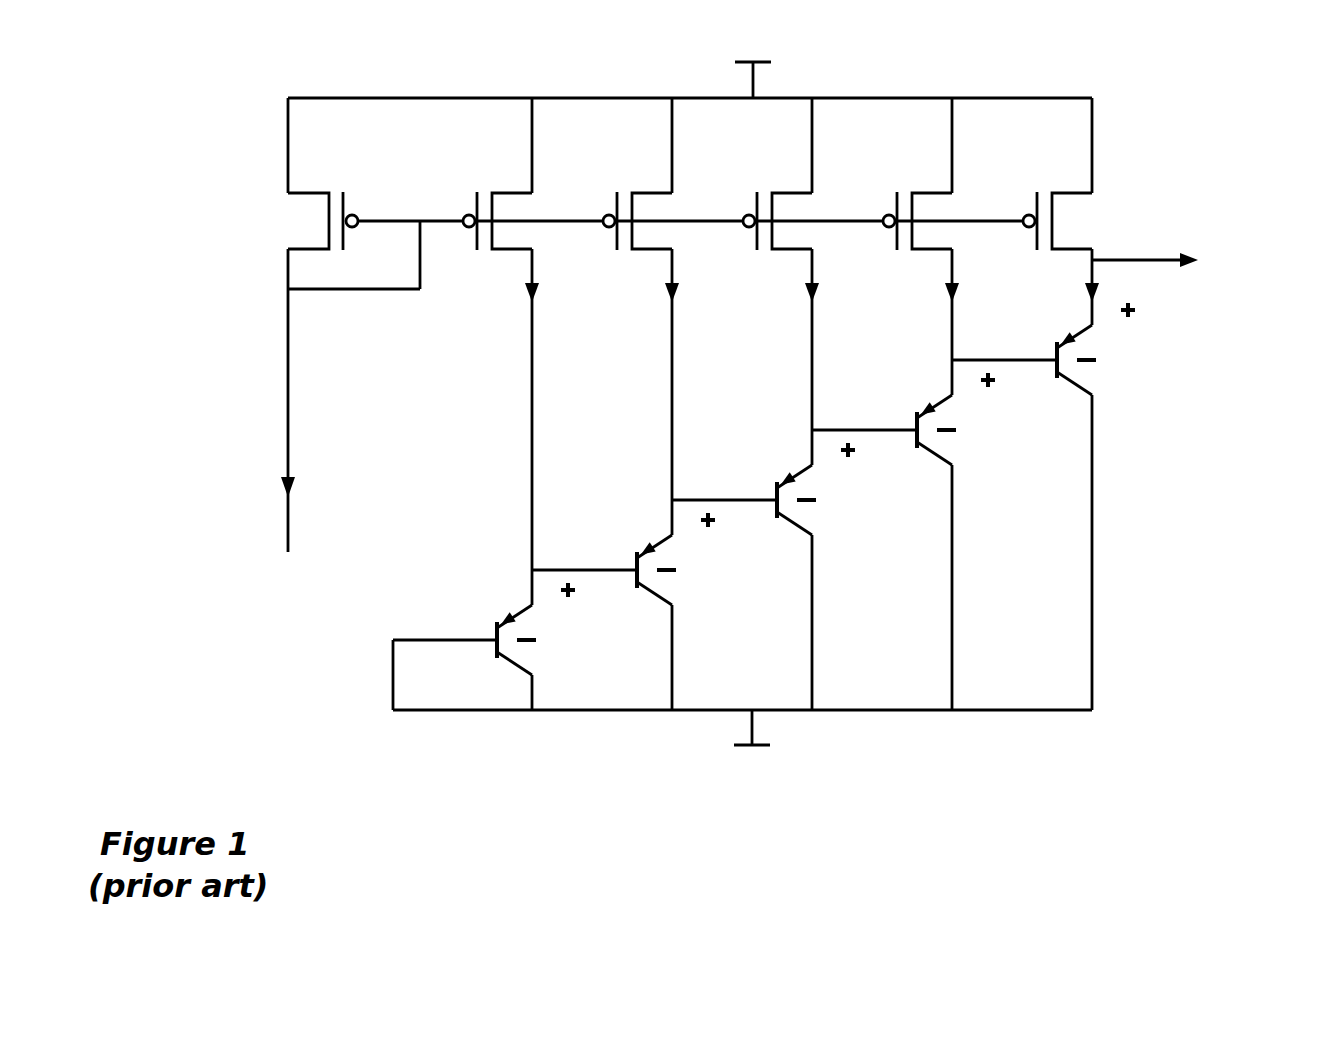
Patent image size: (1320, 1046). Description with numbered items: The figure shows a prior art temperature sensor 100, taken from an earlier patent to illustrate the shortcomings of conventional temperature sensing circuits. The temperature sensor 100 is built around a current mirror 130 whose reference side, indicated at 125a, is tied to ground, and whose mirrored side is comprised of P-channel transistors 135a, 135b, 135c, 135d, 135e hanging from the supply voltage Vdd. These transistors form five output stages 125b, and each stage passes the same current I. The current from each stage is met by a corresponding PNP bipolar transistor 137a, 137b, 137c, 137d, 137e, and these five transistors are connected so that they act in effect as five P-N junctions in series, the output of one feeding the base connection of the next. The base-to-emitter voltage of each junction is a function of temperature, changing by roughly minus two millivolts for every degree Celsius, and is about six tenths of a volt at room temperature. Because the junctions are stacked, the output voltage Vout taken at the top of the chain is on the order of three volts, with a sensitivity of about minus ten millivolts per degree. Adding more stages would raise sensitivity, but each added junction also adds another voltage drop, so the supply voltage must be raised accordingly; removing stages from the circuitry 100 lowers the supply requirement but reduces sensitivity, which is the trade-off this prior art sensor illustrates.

The temperature sensor 100 is at (738, 442).
The current mirror 130 is at (226, 128).
The first current branch to ground 125a is at (363, 603).
The output stages 125b is at (775, 555).
The P-channel transistor 135a is at (516, 183).
The P-channel transistor 135b is at (656, 183).
The P-channel transistor 135c is at (796, 183).
The P-channel transistor 135d is at (936, 183).
The P-channel transistor 135e is at (1076, 183).
The PNP transistor 137a is at (510, 612).
The PNP transistor 137b is at (650, 542).
The PNP transistor 137c is at (790, 472).
The PNP transistor 137d is at (930, 402).
The PNP transistor 137e is at (1070, 332).